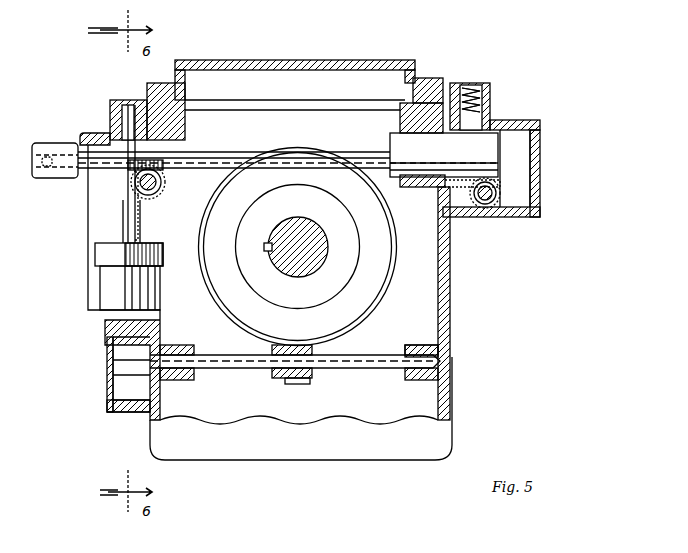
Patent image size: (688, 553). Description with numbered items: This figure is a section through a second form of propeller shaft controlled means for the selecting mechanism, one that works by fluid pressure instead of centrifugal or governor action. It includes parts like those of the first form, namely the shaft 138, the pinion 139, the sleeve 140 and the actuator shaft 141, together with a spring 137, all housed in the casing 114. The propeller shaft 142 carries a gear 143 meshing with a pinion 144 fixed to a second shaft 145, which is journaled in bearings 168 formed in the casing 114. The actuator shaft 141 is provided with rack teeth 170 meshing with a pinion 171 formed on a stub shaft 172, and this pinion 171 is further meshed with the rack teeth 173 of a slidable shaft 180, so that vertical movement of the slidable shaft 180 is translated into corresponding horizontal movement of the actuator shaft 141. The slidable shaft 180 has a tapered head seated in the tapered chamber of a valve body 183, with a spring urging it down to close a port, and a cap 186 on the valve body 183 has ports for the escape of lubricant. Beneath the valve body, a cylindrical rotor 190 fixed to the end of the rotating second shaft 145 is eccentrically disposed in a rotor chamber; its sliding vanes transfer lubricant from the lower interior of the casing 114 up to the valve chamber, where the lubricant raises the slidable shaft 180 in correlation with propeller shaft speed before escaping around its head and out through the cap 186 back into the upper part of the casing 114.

The casing 114 is at (449, 300).
The spring 137 is at (478, 118).
The shaft 138 is at (485, 205).
The pinion 139 is at (498, 192).
The sleeve 140 is at (444, 155).
The actuator shaft 141 is at (352, 155).
The propeller shaft 142 is at (308, 270).
The gear 143 is at (374, 302).
The pinion 144 is at (300, 380).
The second shaft 145 is at (232, 366).
The bearings 168 is at (180, 378).
The rack teeth 170 is at (142, 165).
The pinion 171 is at (163, 183).
The stub shaft 172 is at (148, 198).
The rack teeth 173 is at (133, 192).
The slidable shaft 180 is at (125, 230).
The valve body 183 is at (150, 295).
The cap 186 is at (160, 255).
The cylindrical rotor 190 is at (118, 384).